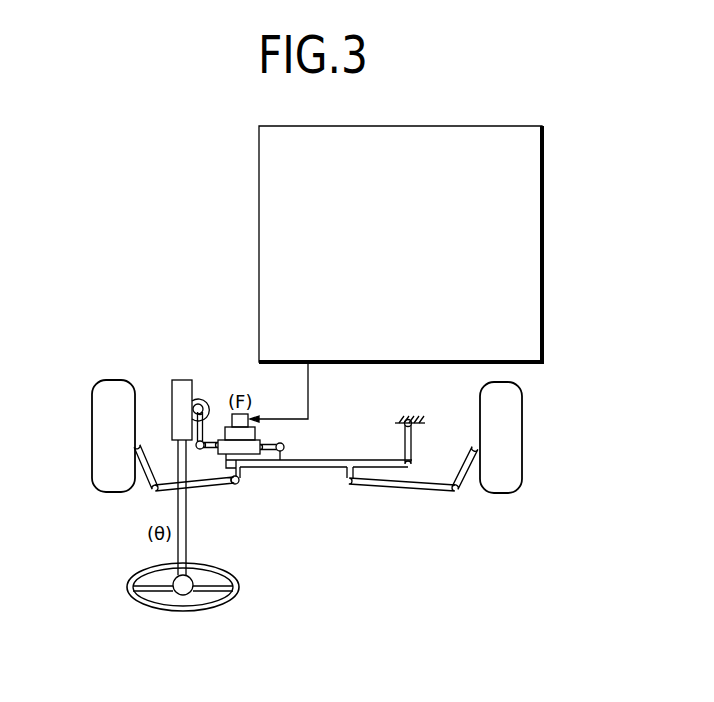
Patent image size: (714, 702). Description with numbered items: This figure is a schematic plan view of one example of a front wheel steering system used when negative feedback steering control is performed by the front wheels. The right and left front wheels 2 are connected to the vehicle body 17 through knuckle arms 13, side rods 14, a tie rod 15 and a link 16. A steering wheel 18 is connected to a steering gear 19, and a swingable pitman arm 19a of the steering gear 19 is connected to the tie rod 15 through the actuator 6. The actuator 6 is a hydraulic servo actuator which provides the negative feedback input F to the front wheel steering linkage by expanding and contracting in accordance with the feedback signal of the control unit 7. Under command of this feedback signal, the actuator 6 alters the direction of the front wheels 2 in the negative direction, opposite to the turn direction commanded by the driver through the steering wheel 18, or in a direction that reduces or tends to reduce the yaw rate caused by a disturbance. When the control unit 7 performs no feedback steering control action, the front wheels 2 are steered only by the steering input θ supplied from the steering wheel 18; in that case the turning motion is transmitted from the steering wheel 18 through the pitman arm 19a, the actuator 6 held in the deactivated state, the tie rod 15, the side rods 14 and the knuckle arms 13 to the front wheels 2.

The front wheels 2 is at (92, 415).
The actuator 6 is at (240, 472).
The control unit 7 is at (545, 154).
The knuckle arms 13 is at (144, 480).
The side rods 14 is at (208, 486).
The tie rod 15 is at (306, 462).
The link 16 is at (415, 446).
The vehicle body 17 is at (410, 416).
The steering wheel 18 is at (242, 588).
The steering gear 19 is at (180, 378).
The pitman arm 19a is at (206, 428).